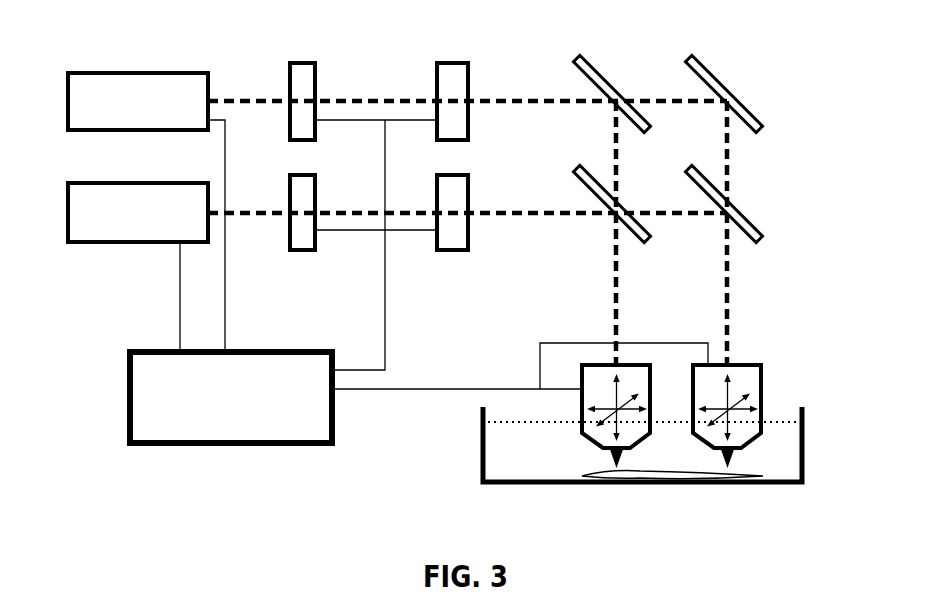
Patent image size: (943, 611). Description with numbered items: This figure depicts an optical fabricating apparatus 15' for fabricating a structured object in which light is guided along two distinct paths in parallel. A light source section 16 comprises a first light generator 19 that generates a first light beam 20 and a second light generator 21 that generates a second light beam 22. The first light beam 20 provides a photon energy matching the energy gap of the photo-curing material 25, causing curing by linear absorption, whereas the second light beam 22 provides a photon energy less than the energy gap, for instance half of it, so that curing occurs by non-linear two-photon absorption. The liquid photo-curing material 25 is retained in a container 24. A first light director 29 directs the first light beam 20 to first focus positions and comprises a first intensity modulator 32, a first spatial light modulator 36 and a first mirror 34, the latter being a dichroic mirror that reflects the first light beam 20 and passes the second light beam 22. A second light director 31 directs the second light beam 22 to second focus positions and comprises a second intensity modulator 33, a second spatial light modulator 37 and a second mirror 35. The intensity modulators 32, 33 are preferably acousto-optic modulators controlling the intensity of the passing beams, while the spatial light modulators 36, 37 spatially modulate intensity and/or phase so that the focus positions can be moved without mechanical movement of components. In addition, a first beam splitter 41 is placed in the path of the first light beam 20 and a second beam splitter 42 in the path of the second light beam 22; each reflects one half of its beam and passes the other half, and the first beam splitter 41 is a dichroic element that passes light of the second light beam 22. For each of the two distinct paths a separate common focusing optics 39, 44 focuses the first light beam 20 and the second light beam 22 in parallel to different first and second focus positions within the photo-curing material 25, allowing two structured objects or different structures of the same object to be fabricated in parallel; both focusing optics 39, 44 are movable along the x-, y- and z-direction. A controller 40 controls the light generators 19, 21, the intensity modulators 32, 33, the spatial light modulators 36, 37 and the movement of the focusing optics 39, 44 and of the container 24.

The optical fabricating apparatus 15' is at (452, 293).
The light source section 16 is at (121, 157).
The first light generator 19 is at (152, 231).
The first light beam 20 is at (508, 212).
The second light generator 21 is at (152, 121).
The second light beam 22 is at (508, 100).
The container 24 is at (802, 452).
The photo-curing material 25 is at (668, 450).
The first light director 29 is at (706, 219).
The second light director 31 is at (711, 83).
The first intensity modulator 32 is at (315, 240).
The second intensity modulator 33 is at (290, 83).
The first mirror 34 is at (757, 238).
The second mirror 35 is at (713, 75).
The first spatial light modulator 36 is at (468, 240).
The second spatial light modulator 37 is at (437, 83).
The common focusing optics 39 is at (738, 371).
The controller 40 is at (234, 415).
The first beam splitter 41 is at (645, 238).
The second beam splitter 42 is at (603, 75).
The common focusing optics 44 is at (602, 436).